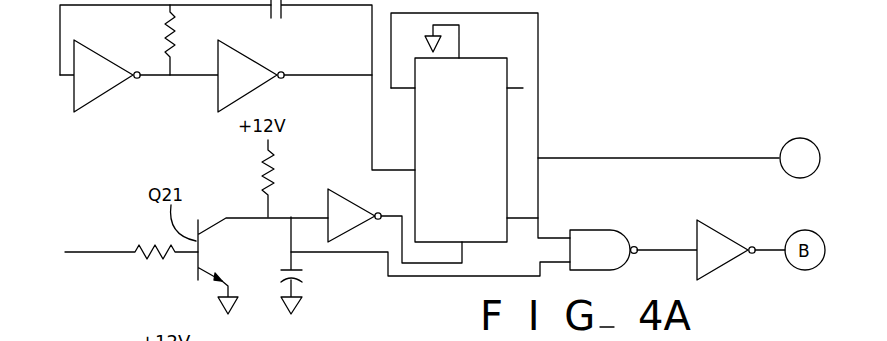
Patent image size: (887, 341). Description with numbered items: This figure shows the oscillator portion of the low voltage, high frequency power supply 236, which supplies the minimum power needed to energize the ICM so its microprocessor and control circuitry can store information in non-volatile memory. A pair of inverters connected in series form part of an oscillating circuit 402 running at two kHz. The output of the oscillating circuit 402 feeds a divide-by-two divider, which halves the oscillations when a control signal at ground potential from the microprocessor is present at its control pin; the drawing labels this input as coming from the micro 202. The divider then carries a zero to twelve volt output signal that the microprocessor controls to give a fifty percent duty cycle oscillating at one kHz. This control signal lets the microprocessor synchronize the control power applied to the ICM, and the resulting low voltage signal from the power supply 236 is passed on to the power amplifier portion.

The oscillating circuit 402 is at (141, 32).
The low voltage, high frequency power supply 236 is at (650, 96).
The microprocessor 202 is at (120, 266).